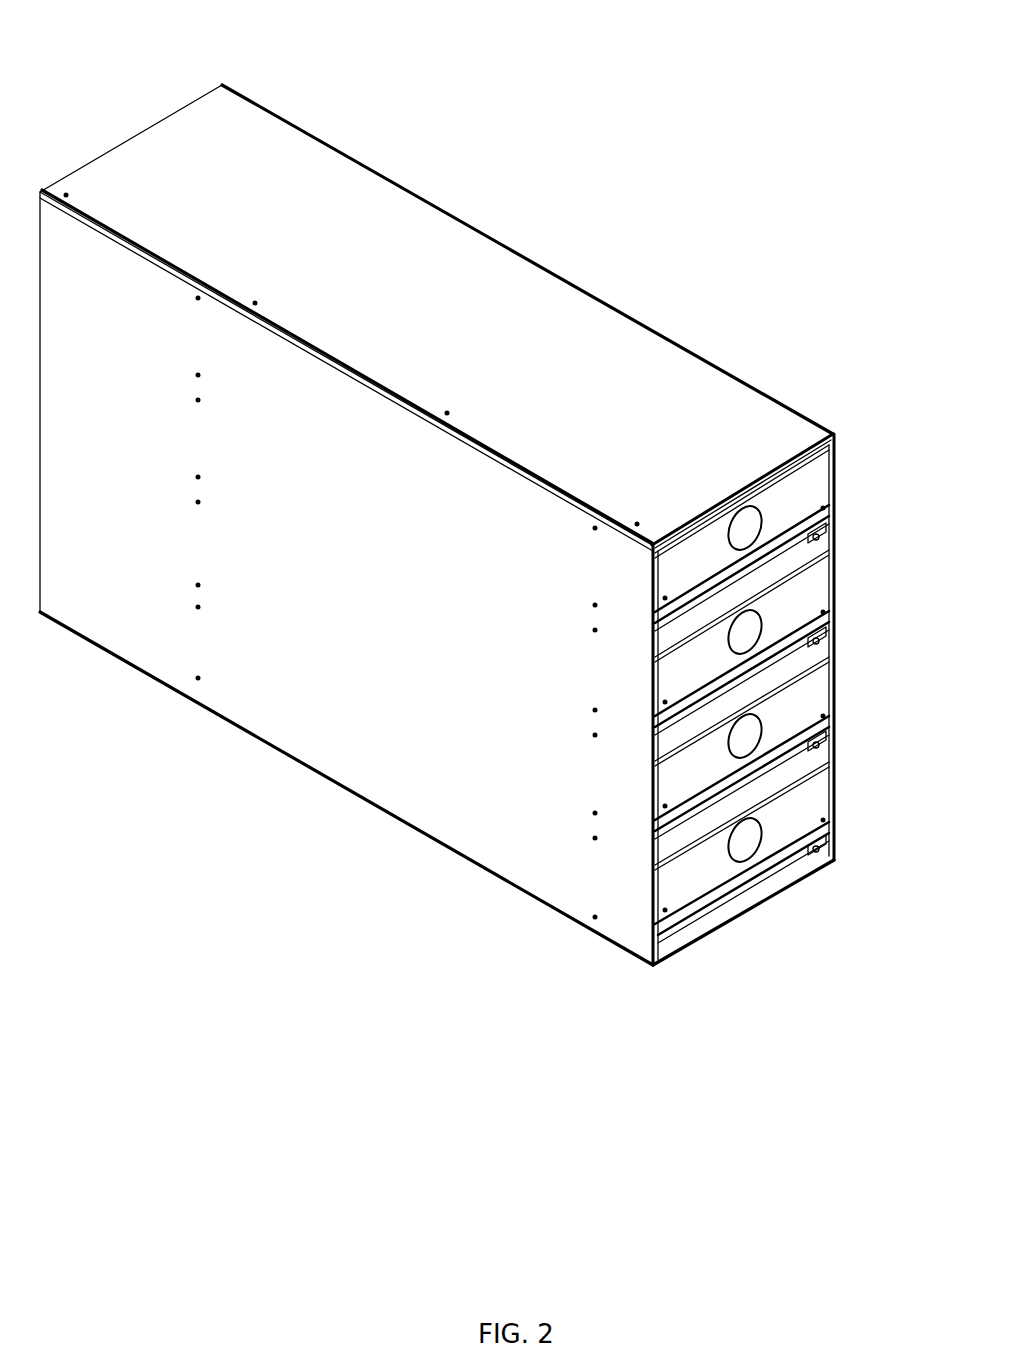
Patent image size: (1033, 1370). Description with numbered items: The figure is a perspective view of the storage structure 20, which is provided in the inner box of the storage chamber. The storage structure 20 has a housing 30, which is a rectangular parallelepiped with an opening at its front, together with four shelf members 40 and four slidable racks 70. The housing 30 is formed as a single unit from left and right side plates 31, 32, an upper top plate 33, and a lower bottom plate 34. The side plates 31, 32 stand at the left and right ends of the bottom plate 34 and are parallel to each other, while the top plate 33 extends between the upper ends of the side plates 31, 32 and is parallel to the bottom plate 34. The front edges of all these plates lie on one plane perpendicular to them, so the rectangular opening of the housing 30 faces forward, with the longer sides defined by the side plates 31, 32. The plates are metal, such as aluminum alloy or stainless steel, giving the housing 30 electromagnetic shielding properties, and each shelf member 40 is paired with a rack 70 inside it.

The storage structure 20 is at (633, 185).
The housing 30 is at (207, 91).
The side plate 31 is at (403, 793).
The side plate 32 is at (833, 547).
The top plate 33 is at (652, 360).
The bottom plate 34 is at (796, 873).
The shelf member 40 is at (690, 603).
The rack 70 is at (813, 486).